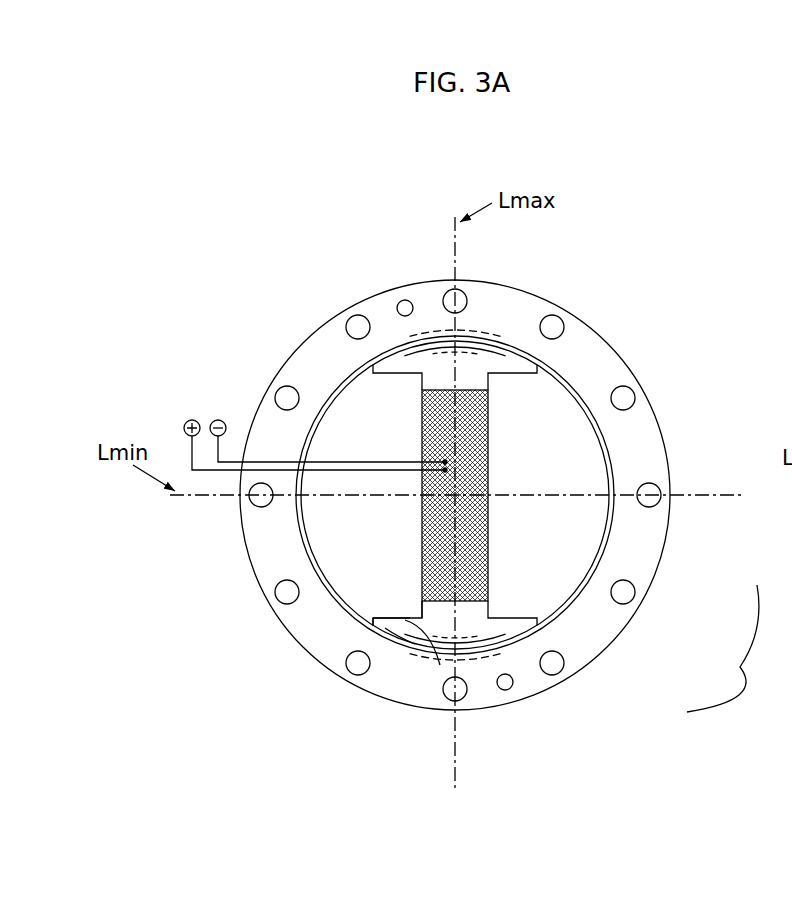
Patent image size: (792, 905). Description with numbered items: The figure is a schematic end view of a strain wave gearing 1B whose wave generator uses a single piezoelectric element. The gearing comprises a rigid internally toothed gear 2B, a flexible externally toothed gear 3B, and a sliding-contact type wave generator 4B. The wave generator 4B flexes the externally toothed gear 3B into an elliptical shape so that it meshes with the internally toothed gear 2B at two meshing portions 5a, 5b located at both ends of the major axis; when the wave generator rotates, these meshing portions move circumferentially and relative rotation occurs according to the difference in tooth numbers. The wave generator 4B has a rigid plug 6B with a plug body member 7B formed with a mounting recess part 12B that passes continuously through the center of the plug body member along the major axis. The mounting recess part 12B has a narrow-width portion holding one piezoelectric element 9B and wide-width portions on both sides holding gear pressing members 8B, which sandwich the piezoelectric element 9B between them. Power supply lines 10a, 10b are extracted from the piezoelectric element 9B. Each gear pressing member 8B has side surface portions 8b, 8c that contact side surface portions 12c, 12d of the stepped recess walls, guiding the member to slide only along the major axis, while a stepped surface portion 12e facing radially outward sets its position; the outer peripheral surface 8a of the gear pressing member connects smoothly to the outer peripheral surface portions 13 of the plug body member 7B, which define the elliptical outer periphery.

The strain wave gearing 1B is at (578, 279).
The rigid internally toothed gear 2B is at (333, 325).
The flexible externally toothed gear 3B is at (347, 370).
The sliding-contact type wave generator 4B is at (352, 407).
The meshing portion 5a is at (473, 320).
The meshing portion 5b is at (477, 670).
The rigid plug 6B is at (732, 648).
The plug body member 7B is at (565, 535).
The gear pressing member 8B is at (507, 374).
The piezoelectric element 9B is at (490, 552).
The power supply line 10a is at (215, 421).
The power supply line 10b is at (192, 443).
The mounting recess part 12B is at (433, 368).
The side surface portion 12c is at (393, 633).
The side surface portion 12d is at (407, 616).
The stepped surface portion 12e is at (405, 622).
The outer peripheral surface portion 13 is at (585, 403).
The outer peripheral surface 8a is at (400, 640).
The side surface portion 8b is at (373, 622).
The side surface portion 8c is at (420, 608).